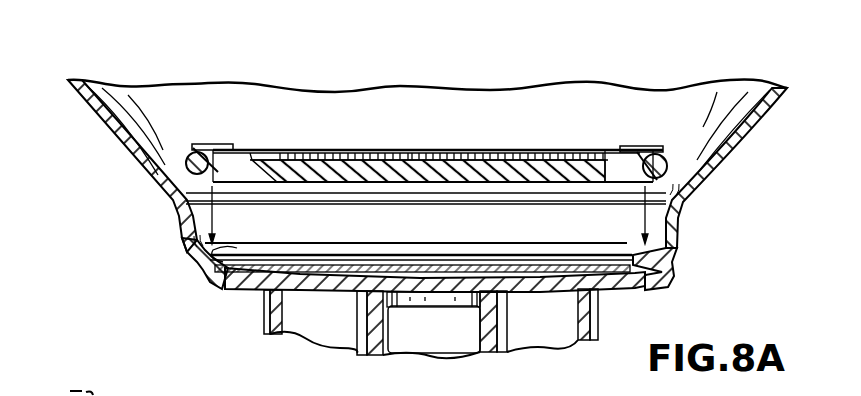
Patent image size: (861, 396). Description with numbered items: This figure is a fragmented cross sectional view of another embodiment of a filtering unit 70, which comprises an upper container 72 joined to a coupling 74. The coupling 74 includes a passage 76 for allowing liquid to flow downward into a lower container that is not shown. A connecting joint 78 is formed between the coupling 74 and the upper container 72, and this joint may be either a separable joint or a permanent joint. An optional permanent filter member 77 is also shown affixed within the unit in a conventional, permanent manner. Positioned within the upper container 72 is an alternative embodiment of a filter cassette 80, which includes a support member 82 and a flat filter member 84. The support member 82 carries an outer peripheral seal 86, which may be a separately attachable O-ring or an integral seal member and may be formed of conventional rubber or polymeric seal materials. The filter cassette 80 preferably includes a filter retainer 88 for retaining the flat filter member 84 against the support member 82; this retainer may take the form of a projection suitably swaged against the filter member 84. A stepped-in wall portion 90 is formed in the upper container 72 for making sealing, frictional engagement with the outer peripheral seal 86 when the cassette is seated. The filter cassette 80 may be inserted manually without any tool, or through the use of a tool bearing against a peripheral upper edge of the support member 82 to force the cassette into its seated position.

The filtering unit 70 is at (92, 56).
The upper container 72 is at (268, 124).
The coupling 74 is at (266, 306).
The passage 76 is at (437, 301).
The permanent filter member 77 is at (482, 266).
The connecting joint 78 is at (195, 261).
The filter cassette 80 is at (425, 153).
The support member 82 is at (272, 163).
The flat filter member 84 is at (512, 151).
The outer peripheral seal 86 is at (185, 154).
The filter retainer 88 is at (668, 226).
The stepped-in wall portion 90 is at (217, 144).